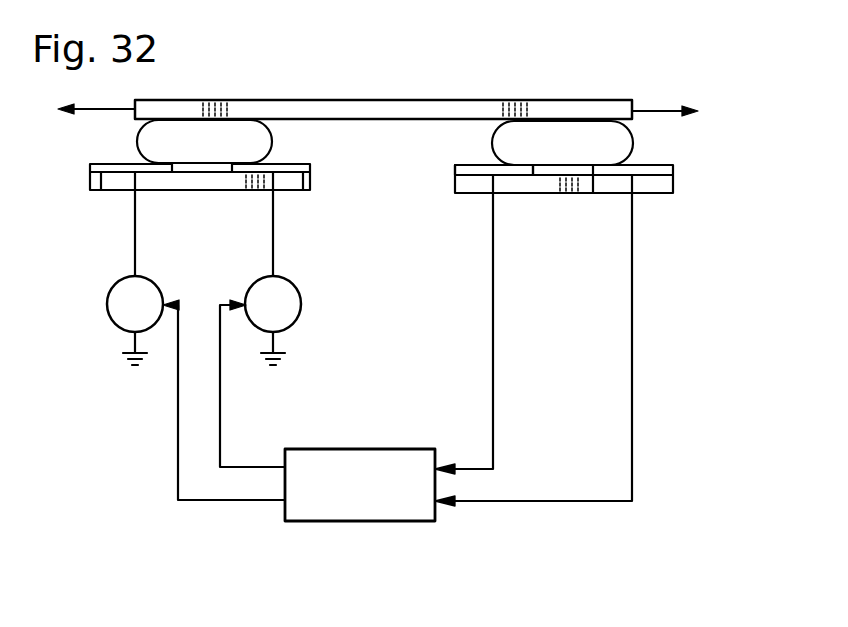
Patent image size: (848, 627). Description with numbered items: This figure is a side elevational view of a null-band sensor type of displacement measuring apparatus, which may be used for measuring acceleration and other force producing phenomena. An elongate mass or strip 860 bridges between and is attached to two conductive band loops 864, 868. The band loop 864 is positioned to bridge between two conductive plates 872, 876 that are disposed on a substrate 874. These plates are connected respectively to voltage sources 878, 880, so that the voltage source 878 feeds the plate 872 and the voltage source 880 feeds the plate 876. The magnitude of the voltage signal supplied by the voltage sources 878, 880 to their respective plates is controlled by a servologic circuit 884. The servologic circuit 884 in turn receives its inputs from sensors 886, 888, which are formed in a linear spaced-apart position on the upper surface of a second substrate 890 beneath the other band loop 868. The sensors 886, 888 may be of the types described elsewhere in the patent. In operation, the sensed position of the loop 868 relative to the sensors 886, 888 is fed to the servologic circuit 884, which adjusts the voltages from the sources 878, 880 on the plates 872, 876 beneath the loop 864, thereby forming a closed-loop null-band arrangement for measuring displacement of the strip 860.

The elongate mass or strip 860 is at (457, 107).
The conductive band loop 864 is at (137, 142).
The conductive band loop 868 is at (633, 137).
The conductive plate 872 is at (101, 190).
The substrate 874 is at (195, 180).
The conductive plate 876 is at (295, 190).
The voltage source 878 is at (108, 300).
The voltage source 880 is at (300, 312).
The servologic circuit 884 is at (362, 521).
The sensor 886 is at (472, 165).
The sensor 888 is at (673, 168).
The substrate 890 is at (558, 182).